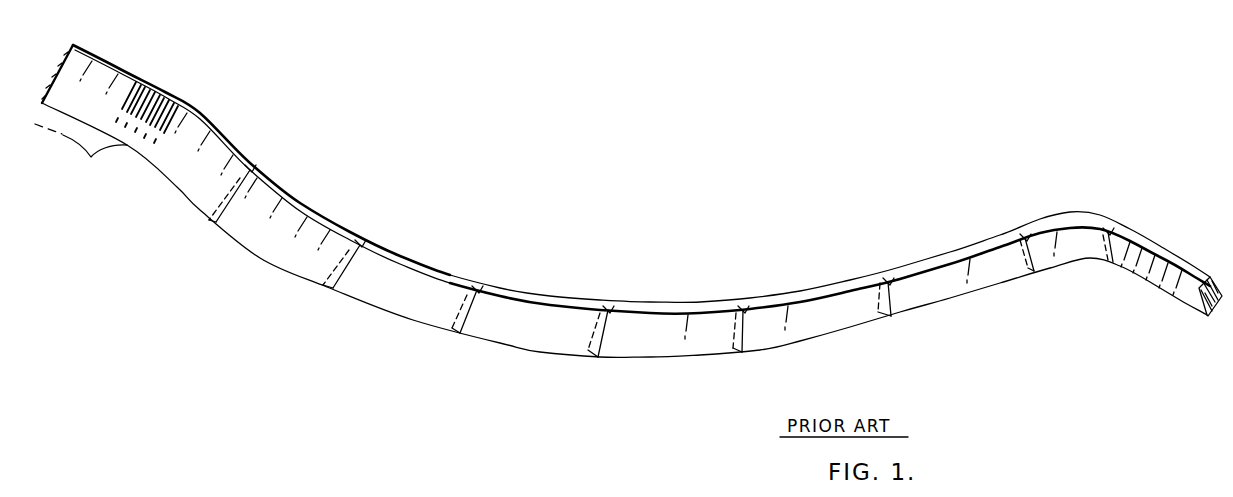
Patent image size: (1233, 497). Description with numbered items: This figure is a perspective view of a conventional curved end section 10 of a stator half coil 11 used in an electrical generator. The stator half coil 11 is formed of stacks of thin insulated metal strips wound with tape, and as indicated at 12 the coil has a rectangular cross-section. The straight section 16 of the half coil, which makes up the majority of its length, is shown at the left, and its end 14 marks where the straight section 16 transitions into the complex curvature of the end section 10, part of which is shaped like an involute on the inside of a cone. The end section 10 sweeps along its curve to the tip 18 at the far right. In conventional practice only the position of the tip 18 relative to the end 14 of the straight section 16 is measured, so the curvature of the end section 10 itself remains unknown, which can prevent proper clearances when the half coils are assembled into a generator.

The end section 10 is at (520, 282).
The stator half coil 11 is at (392, 317).
The rectangular cross-section 12 is at (608, 336).
The end of the straight section 14 is at (150, 73).
The straight section 16 is at (81, 150).
The tip 18 is at (1212, 278).